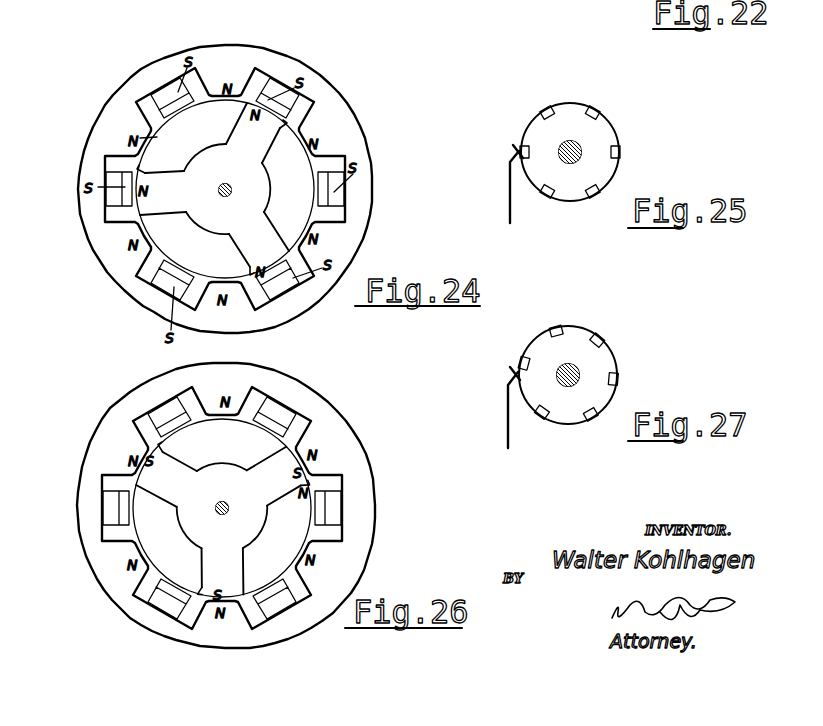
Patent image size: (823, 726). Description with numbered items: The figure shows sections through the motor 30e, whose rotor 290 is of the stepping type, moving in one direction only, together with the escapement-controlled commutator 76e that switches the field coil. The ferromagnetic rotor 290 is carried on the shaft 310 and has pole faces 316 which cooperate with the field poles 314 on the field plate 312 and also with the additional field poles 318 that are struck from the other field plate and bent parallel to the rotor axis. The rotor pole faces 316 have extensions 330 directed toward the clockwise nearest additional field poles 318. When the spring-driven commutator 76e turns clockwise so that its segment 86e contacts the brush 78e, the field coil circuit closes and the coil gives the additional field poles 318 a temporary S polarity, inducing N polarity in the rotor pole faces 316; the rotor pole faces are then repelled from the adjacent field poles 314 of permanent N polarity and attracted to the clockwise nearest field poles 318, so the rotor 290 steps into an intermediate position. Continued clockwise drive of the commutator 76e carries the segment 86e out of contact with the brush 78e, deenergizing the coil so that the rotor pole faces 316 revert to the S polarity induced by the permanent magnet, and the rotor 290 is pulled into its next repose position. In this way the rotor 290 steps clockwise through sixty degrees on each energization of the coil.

In FIG. 24, the field plate 312 is at (233, 63).
In FIG. 26, the field plate 312 is at (267, 377).
In FIG. 24, the motor 30e is at (337, 77).
In FIG. 26, the motor 30e is at (350, 413).
In FIG. 24, the additional field poles 318 is at (170, 103).
In FIG. 26, the additional field poles 318 is at (177, 418).
In FIG. 24, the field poles 314 is at (215, 101).
In FIG. 26, the field poles 314 is at (213, 419).
In FIG. 24, the rotor pole faces 316 is at (246, 120).
In FIG. 26, the rotor pole faces 316 is at (145, 477).
In FIG. 24, the extensions 330 is at (282, 132).
In FIG. 26, the extensions 330 is at (158, 443).
In FIG. 24, the rotor 290 is at (273, 185).
In FIG. 26, the rotor 290 is at (220, 458).
In FIG. 24, the shaft 310 is at (223, 198).
In FIG. 26, the shaft 310 is at (227, 502).
In FIG. 25, the escapement-controlled commutator 76e is at (613, 120).
In FIG. 27, the escapement-controlled commutator 76e is at (613, 348).
In FIG. 25, the commutator segment 86e is at (557, 148).
In FIG. 27, the commutator segment 86e is at (523, 373).
In FIG. 25, the brush 78e is at (507, 193).
In FIG. 27, the brush 78e is at (507, 412).